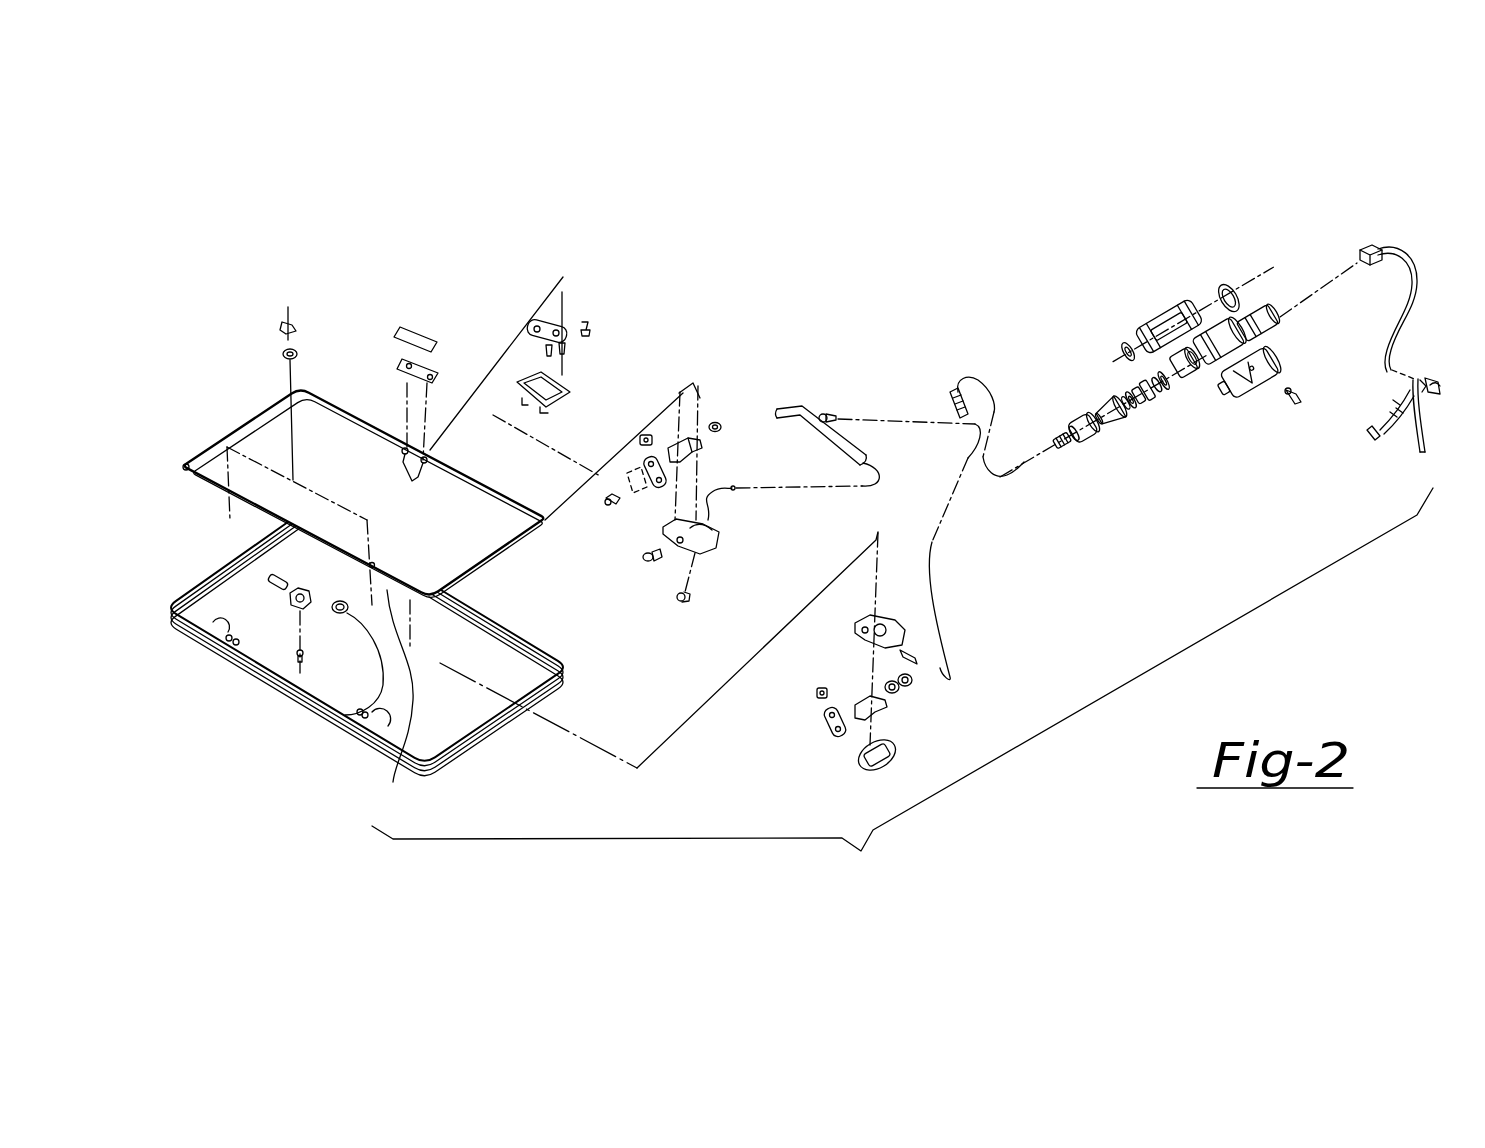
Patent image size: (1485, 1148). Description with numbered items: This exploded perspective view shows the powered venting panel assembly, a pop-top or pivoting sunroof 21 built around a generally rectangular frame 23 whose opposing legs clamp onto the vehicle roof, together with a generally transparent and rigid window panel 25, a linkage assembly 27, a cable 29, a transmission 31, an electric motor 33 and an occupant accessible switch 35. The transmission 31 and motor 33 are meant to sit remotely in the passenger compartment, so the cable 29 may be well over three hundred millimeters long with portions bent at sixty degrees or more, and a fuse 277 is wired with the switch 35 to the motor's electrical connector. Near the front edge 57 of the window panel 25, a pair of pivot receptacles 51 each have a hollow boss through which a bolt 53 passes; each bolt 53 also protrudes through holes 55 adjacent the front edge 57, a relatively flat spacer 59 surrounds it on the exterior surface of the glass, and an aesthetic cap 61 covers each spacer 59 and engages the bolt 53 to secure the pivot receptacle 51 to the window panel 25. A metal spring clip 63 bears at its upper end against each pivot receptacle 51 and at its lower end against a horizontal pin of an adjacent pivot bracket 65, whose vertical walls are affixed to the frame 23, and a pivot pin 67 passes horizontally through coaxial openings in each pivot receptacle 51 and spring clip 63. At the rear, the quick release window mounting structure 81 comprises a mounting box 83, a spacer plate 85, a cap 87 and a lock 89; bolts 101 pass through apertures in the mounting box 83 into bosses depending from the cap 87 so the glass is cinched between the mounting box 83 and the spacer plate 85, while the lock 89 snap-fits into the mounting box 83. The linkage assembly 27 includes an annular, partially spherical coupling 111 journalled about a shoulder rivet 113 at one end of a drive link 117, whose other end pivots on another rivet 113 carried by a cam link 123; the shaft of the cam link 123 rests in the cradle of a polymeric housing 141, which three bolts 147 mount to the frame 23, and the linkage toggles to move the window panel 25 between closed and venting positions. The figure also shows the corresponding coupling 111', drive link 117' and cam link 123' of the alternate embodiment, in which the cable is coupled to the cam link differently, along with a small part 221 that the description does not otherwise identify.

The pivoting sunroof 21 is at (902, 583).
The frame 23 is at (250, 660).
The window panel 25 is at (333, 442).
The linkage assembly 27 is at (697, 386).
The cable 29 is at (779, 410).
The transmission 31 is at (1079, 362).
The electric motor 33 is at (1212, 335).
The occupant accessible switch 35 is at (1442, 380).
The pivot receptacle 51 is at (277, 603).
The bolt 53 is at (302, 648).
The holes 55 is at (186, 467).
The front edge 57 is at (390, 695).
The spacer 59 is at (283, 357).
The aesthetic cap 61 is at (283, 327).
The spring clip 63 is at (345, 710).
The pivot bracket 65 is at (210, 627).
The pivot pin 67 is at (268, 578).
The quick release rear window mounting structure 81 is at (556, 277).
The mounting box 83 is at (553, 325).
The spacer plate 85 is at (437, 370).
The cap 87 is at (420, 327).
The lock 89 is at (563, 398).
The bolts 101 is at (592, 330).
The coupling 111 is at (656, 403).
The shoulder rivet 113 is at (607, 503).
The drive link 117 is at (618, 519).
The cam link 123 is at (720, 455).
The housing 141 is at (720, 540).
The bolts 147 is at (650, 560).
The washer 221 is at (714, 424).
The fuse 277 is at (1393, 405).
The nut 111' is at (812, 666).
The bracket 117' is at (802, 711).
The latch bolt 123' is at (900, 654).